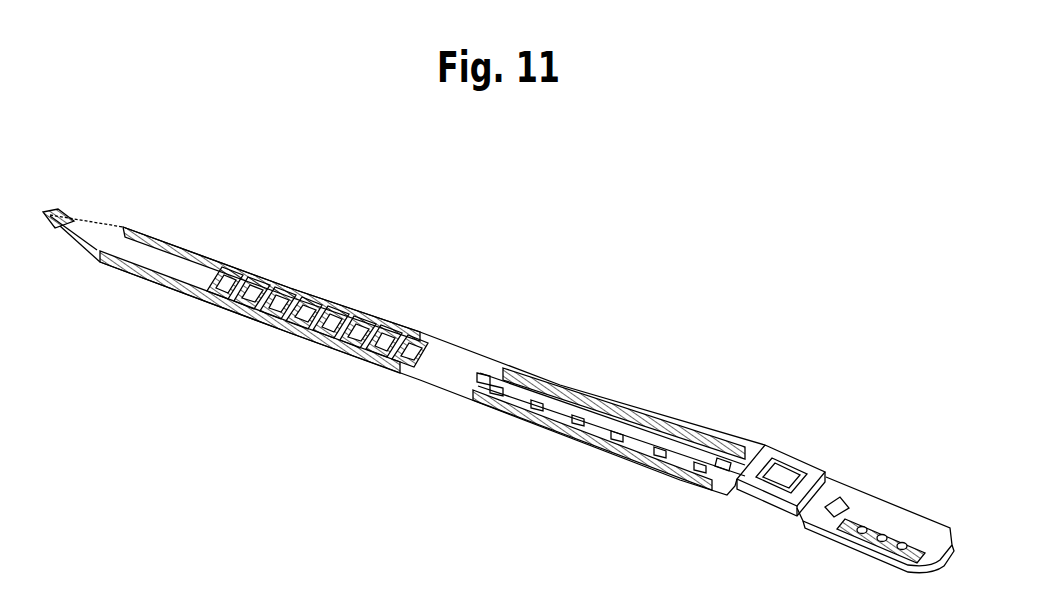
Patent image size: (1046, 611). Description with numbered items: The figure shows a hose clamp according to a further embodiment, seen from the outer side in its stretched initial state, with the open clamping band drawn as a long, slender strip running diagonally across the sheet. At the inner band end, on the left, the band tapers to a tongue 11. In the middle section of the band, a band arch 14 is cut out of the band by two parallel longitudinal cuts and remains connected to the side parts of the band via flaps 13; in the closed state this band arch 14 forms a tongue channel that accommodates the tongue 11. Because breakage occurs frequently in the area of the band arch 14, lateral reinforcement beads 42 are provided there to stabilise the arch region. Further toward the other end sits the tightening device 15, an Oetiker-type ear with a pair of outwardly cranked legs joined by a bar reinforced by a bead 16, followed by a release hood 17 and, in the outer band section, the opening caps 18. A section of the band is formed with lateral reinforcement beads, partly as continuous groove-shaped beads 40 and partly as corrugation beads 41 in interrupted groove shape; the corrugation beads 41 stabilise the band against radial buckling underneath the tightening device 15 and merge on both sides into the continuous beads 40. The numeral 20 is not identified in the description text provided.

The tongue 11 is at (78, 212).
The flaps 13 is at (627, 408).
The band arch 14 is at (513, 380).
The tightening device 15 is at (770, 448).
The bead 16 is at (823, 468).
The release hood 17 is at (847, 507).
The opening caps 18 is at (855, 533).
The elongated carrier body 20 is at (292, 306).
The continuous groove-shaped reinforcement beads 40 is at (388, 322).
The corrugation beads 41 is at (185, 247).
The lateral reinforcement beads 42 is at (568, 425).